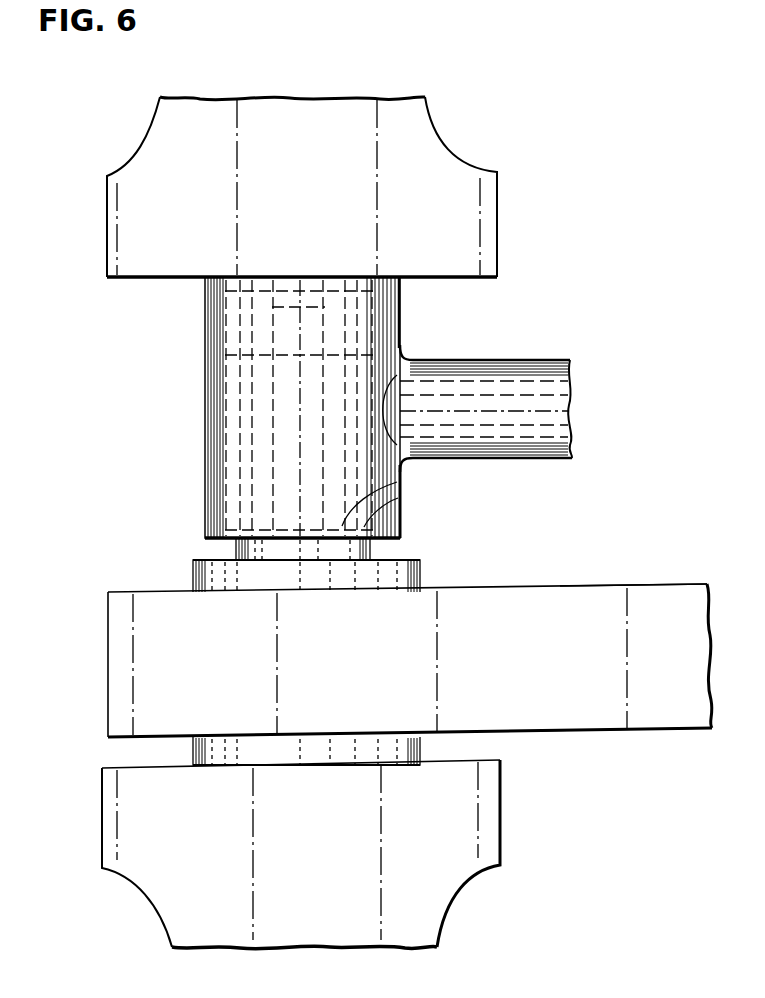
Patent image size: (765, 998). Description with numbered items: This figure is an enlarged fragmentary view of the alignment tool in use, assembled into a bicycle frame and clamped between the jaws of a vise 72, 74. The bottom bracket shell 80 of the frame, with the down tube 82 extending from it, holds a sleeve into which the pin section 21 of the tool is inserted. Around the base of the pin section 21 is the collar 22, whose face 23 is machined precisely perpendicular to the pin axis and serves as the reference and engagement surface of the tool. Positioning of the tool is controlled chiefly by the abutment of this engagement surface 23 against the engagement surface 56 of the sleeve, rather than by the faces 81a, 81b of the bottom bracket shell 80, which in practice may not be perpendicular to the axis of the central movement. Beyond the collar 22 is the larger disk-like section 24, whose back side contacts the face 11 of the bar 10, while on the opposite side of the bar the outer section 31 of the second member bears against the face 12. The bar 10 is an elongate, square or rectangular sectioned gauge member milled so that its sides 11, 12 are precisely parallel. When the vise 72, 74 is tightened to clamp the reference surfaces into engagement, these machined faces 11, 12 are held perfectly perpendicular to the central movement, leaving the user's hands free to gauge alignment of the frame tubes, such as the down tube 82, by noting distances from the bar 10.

The bar 10 is at (551, 678).
The side of bar 11 is at (645, 586).
The side of bar 12 is at (568, 732).
The pin section 21 is at (302, 290).
The collar section 22 is at (363, 551).
The collar face 23 is at (342, 526).
The disk-like section 24 is at (420, 573).
The outer section 31 is at (423, 749).
The engagement surface of sleeve 56 is at (364, 527).
The vise jaw 72 is at (498, 201).
The vise jaw 74 is at (500, 804).
The bottom bracket shell 80 is at (205, 406).
The face of bottom bracket shell 81a is at (218, 548).
The face of bottom bracket shell 81b is at (212, 277).
The down tube 82 is at (507, 360).